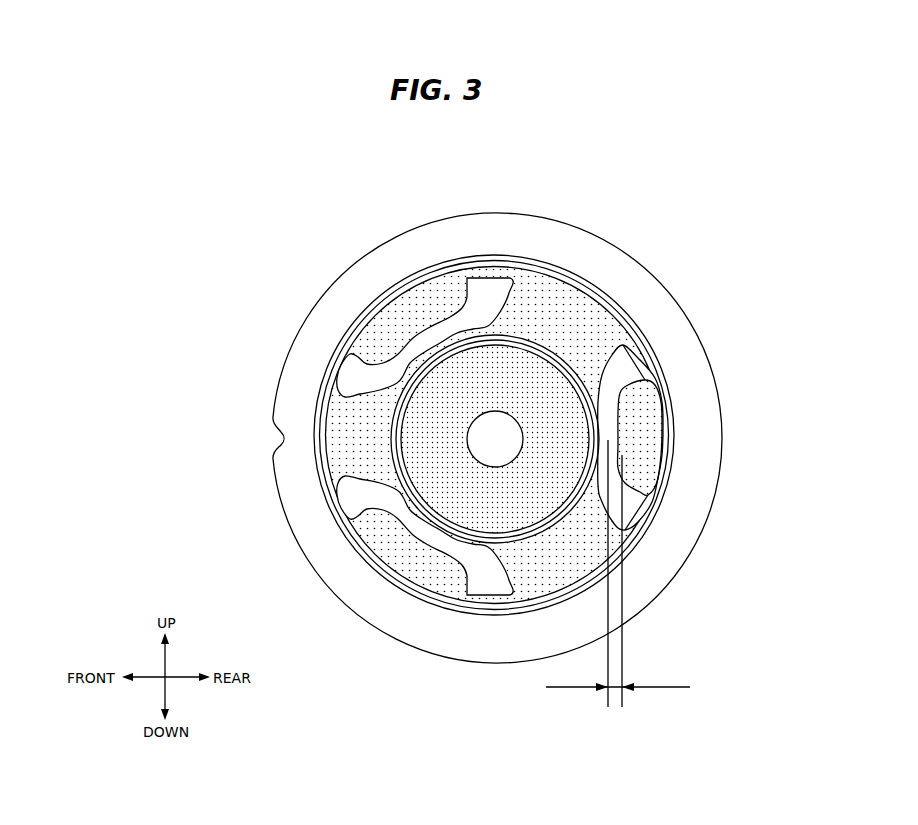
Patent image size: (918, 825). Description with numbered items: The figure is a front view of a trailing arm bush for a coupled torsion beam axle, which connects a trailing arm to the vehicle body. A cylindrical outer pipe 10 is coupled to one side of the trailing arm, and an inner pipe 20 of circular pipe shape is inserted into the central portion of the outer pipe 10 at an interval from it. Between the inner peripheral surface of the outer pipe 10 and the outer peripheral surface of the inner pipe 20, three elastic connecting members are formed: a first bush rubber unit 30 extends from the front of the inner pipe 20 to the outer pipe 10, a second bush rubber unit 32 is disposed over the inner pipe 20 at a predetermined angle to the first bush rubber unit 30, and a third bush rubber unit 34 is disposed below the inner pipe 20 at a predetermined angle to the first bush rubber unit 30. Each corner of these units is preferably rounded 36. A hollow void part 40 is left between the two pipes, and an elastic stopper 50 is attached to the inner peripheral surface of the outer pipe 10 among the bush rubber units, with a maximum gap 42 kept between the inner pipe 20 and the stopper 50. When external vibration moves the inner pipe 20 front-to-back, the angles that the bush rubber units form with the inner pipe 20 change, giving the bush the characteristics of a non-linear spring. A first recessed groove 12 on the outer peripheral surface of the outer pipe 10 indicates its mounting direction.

The outer pipe 10 is at (660, 302).
The first recessed groove 12 is at (280, 438).
The inner pipe 20 is at (463, 492).
The first bush rubber unit 30 is at (347, 427).
The second bush rubber unit 32 is at (568, 310).
The third bush rubber unit 34 is at (545, 573).
The rounded corner 36 is at (606, 363).
The hollow void part 40 is at (491, 295).
The maximum gap 42 is at (618, 589).
The stopper 50 is at (649, 433).